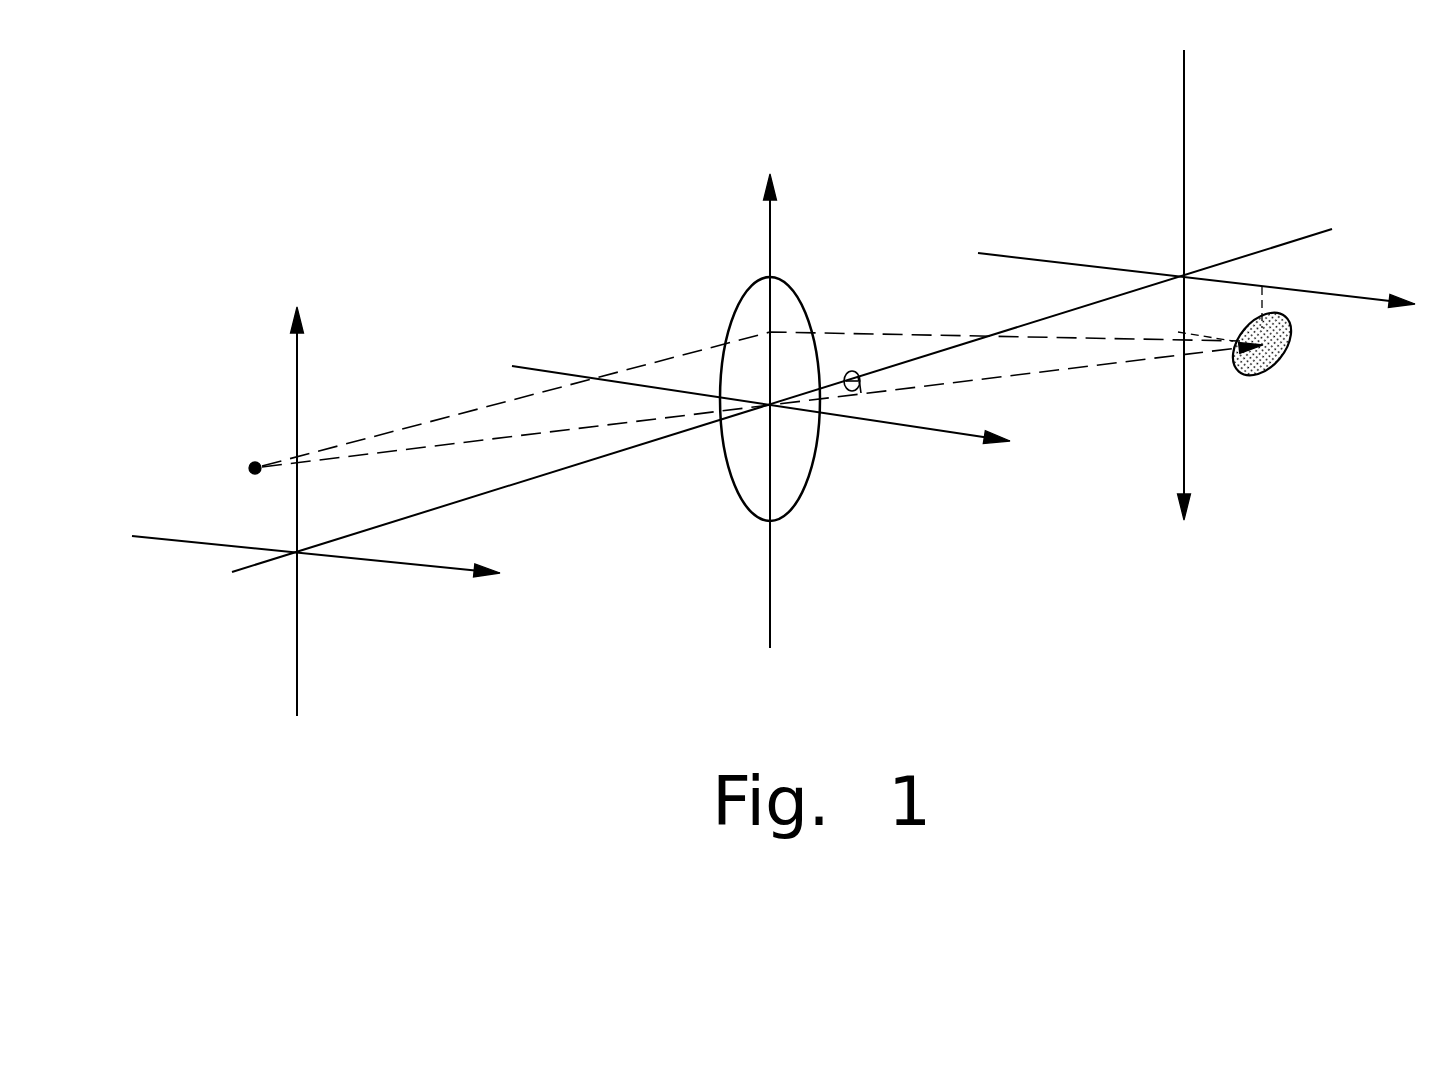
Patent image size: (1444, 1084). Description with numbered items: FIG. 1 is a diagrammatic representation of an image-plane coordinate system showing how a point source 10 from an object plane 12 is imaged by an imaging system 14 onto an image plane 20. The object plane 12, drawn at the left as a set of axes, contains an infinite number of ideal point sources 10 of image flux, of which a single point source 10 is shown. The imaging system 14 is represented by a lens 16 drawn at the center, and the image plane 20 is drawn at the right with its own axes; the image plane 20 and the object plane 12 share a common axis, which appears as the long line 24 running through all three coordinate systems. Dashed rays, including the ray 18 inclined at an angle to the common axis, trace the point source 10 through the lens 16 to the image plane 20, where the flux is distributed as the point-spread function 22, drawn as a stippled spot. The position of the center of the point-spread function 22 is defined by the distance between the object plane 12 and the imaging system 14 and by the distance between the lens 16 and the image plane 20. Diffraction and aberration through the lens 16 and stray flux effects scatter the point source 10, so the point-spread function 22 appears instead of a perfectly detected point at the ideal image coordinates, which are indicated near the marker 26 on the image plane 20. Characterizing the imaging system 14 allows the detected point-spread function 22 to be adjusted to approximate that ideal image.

The point source 10 is at (253, 462).
The object plane 12 is at (387, 674).
The imaging system 14 is at (848, 562).
The lens 16 is at (805, 302).
The chief ray 18 is at (914, 373).
The image plane 20 is at (1291, 396).
The point-spread function 22 is at (1293, 344).
The optical axis 24 is at (1294, 257).
The image position coordinate y0 26 is at (1138, 313).